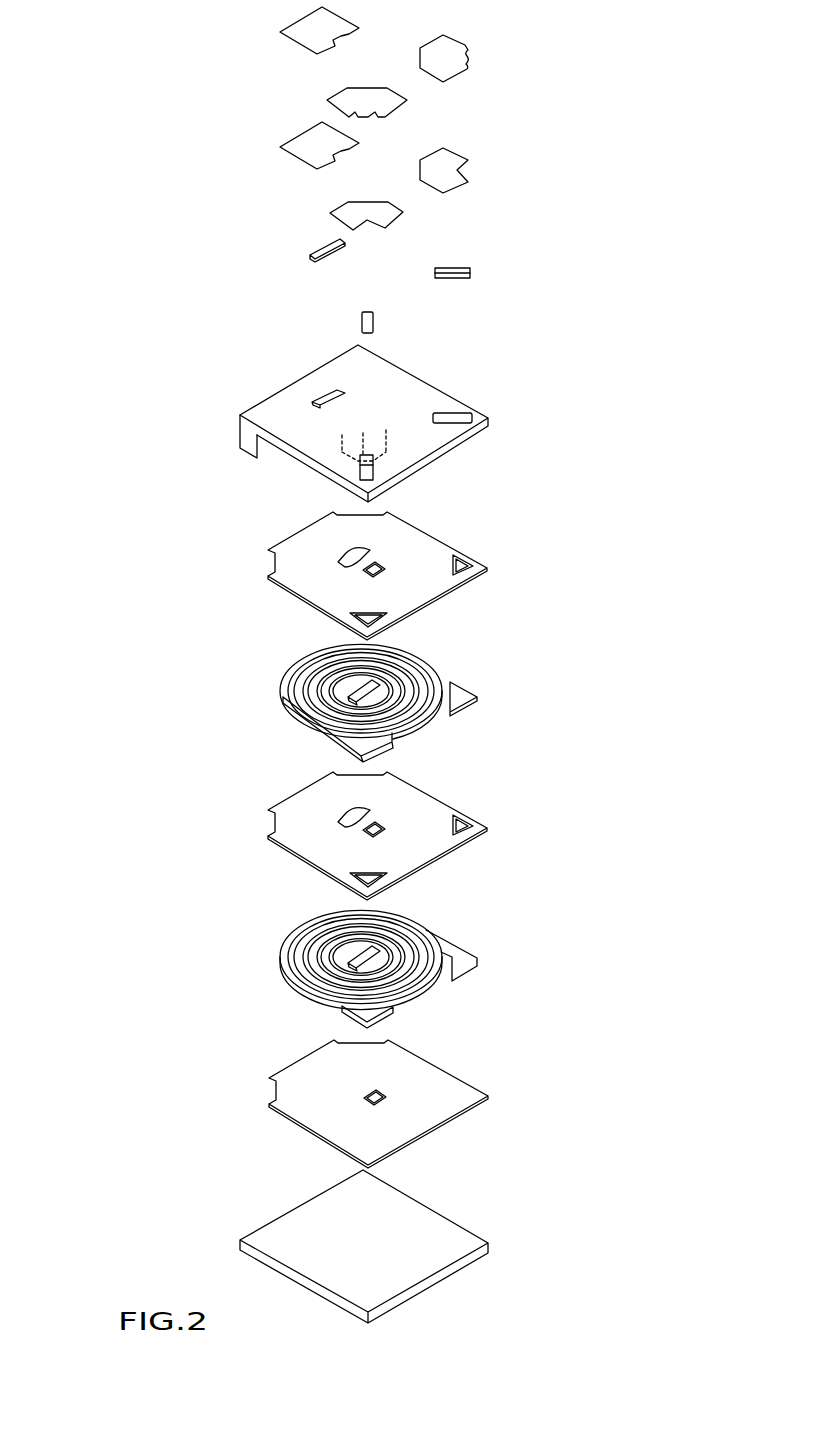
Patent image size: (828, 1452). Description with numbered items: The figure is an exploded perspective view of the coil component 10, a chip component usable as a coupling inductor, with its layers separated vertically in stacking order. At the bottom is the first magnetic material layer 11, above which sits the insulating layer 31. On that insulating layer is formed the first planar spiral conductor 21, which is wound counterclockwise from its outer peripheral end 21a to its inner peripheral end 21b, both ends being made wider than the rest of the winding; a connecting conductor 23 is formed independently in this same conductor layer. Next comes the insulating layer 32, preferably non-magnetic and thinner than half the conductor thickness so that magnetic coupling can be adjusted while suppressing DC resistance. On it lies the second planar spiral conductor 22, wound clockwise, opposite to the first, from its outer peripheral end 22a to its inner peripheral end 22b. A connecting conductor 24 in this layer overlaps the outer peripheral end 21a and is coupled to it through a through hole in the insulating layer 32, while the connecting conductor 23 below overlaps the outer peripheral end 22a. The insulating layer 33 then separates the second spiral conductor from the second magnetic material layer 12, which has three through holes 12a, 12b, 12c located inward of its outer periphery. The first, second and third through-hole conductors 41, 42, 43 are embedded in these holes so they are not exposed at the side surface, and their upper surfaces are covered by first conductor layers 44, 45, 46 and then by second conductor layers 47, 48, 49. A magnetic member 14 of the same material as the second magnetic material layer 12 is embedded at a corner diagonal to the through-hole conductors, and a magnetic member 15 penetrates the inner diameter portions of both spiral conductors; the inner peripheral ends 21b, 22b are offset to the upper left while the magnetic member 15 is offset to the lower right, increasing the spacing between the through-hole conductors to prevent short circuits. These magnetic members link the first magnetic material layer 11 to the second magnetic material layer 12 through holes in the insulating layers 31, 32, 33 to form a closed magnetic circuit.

The coil component 10 is at (621, 27).
The first magnetic material layer 11 is at (425, 1265).
The second magnetic material layer 12 is at (290, 382).
The through hole 12a is at (470, 414).
The through hole 12b is at (375, 462).
The through hole 12c is at (325, 395).
The magnetic member 14 is at (243, 440).
The magnetic member 15 is at (340, 456).
The first planar spiral conductor 21 is at (305, 930).
The outer peripheral end 21a is at (470, 962).
The inner peripheral end 21b is at (380, 952).
The second planar spiral conductor 22 is at (305, 666).
The outer peripheral end 22a is at (390, 750).
The inner peripheral end 22b is at (380, 690).
The connecting conductor 23 is at (372, 1015).
The connecting conductor 24 is at (478, 695).
The insulating layer 31 is at (425, 1115).
The insulating layer 32 is at (415, 856).
The insulating layer 33 is at (410, 594).
The first through-hole conductor 41 is at (472, 273).
The second through-hole conductor 42 is at (375, 318).
The third through-hole conductor 43 is at (310, 256).
The first conductor layer 44 is at (455, 158).
The first conductor layer 45 is at (400, 209).
The first conductor layer 46 is at (302, 150).
The second conductor layer 47 is at (453, 44).
The second conductor layer 48 is at (346, 98).
The second conductor layer 49 is at (300, 37).